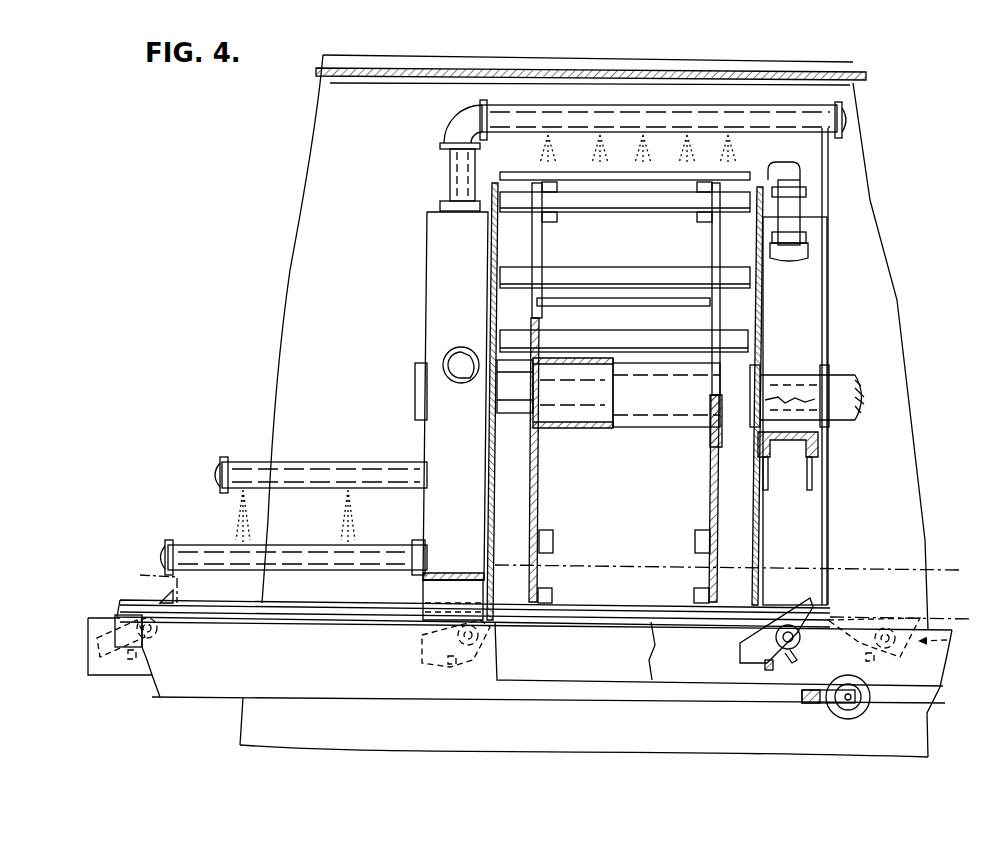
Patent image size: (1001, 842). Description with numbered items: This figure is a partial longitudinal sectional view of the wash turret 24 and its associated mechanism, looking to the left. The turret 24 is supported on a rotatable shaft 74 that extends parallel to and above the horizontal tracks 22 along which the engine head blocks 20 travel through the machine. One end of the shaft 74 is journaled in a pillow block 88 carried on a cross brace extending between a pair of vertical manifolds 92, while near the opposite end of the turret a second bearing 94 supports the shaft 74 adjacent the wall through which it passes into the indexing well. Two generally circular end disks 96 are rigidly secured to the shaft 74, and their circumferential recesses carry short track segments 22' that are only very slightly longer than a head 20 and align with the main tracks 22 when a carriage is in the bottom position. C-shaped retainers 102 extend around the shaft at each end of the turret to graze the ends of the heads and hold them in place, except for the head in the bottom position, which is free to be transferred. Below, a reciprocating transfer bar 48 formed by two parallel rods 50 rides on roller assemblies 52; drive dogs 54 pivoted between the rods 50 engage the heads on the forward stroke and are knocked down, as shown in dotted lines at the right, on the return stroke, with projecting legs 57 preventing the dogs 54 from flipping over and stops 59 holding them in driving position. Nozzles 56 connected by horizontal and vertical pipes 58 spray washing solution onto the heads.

The engine head block 20 is at (940, 558).
The horizontal tracks 22 is at (435, 597).
The track segments 22' is at (625, 262).
The wash turret 24 is at (862, 281).
The transfer bar 48 is at (137, 680).
The rods 50 is at (950, 650).
The roller assemblies 52 is at (850, 720).
The drive dogs 54 is at (421, 650).
The nozzles 56 is at (730, 139).
The projecting legs 57 is at (798, 659).
The pipes 58 is at (722, 109).
The stops 59 is at (769, 672).
The rotatable shaft 74 is at (856, 397).
The pillow block 88 is at (441, 364).
The vertical manifolds 92 is at (427, 259).
The second bearing 94 is at (823, 378).
The end disks 96 is at (540, 484).
The C-shaped retainers 102 is at (490, 258).